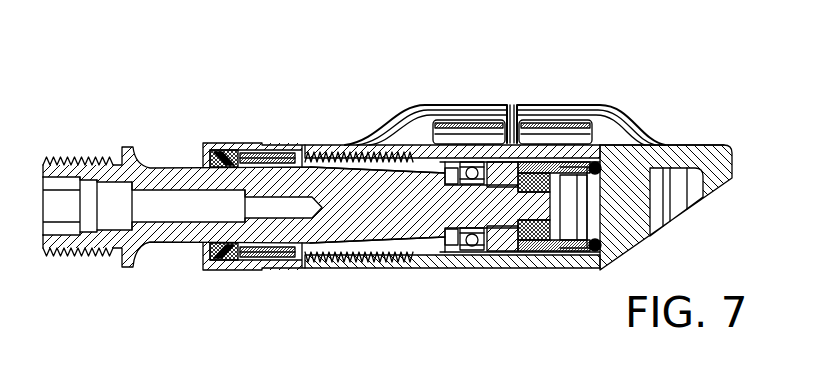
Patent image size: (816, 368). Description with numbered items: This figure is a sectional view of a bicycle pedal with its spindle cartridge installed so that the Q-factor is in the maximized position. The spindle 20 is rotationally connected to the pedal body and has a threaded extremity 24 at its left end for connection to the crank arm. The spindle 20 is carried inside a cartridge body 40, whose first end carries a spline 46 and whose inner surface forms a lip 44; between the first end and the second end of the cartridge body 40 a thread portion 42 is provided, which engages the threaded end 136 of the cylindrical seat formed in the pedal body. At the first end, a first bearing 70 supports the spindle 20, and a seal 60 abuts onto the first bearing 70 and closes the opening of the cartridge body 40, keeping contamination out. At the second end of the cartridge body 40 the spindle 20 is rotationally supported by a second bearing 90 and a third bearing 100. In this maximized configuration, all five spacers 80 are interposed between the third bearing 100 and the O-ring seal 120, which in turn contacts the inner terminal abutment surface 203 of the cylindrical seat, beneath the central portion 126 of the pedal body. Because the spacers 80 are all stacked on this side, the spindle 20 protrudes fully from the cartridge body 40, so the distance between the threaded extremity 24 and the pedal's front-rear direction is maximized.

The spindle 20 is at (180, 165).
The threaded extremity 24 is at (83, 157).
The cartridge body 40 is at (400, 143).
The thread portion 42 is at (353, 145).
The lip 44 is at (463, 157).
The spline 46 is at (252, 143).
The seal 60 is at (203, 255).
The first bearing 70 is at (260, 270).
The spacers 80 is at (578, 145).
The second bearing 90 is at (472, 250).
The third bearing 100 is at (515, 252).
The O-ring seal 120 is at (620, 145).
The central portion 126 is at (657, 143).
The threaded end 136 is at (353, 232).
The inner terminal abutment surface 203 is at (596, 208).